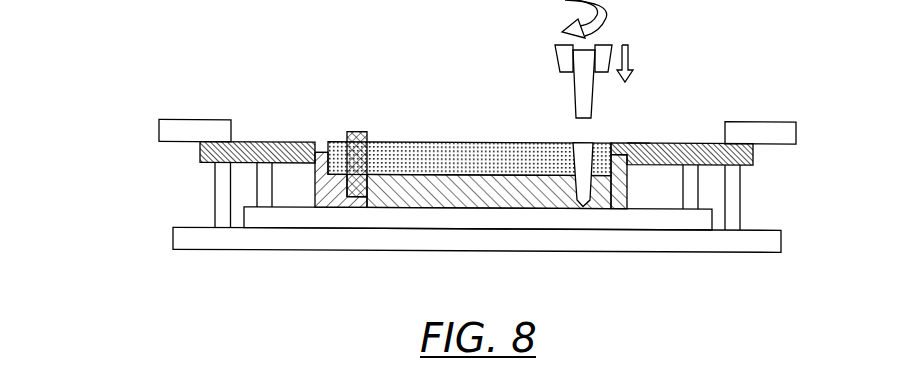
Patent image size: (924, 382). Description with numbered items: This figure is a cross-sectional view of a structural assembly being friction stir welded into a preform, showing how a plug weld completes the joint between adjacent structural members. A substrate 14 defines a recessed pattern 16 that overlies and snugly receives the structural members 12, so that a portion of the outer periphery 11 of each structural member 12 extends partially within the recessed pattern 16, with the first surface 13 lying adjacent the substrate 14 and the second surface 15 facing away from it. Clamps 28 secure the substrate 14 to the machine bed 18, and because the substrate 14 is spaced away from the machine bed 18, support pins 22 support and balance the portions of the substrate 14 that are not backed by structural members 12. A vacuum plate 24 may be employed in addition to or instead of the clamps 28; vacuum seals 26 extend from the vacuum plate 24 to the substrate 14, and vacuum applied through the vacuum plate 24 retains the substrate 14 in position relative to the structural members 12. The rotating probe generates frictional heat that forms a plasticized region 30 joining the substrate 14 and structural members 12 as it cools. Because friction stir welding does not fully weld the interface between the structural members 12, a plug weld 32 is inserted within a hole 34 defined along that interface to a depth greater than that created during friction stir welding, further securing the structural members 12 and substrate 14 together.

The outer periphery 11 is at (638, 143).
The structural member 12 is at (343, 205).
The first surface 13 is at (322, 148).
The substrate 14 is at (663, 143).
The second surface 15 is at (507, 208).
The recessed pattern 16 is at (313, 150).
The machine bed 18 is at (767, 242).
The support pins 22 is at (222, 182).
The vacuum plate 24 is at (259, 219).
The vacuum seals 26 is at (257, 194).
The clamps 28 is at (193, 117).
The plasticized region 30 is at (407, 148).
The plug weld 32 is at (347, 130).
The hole 34 is at (563, 145).